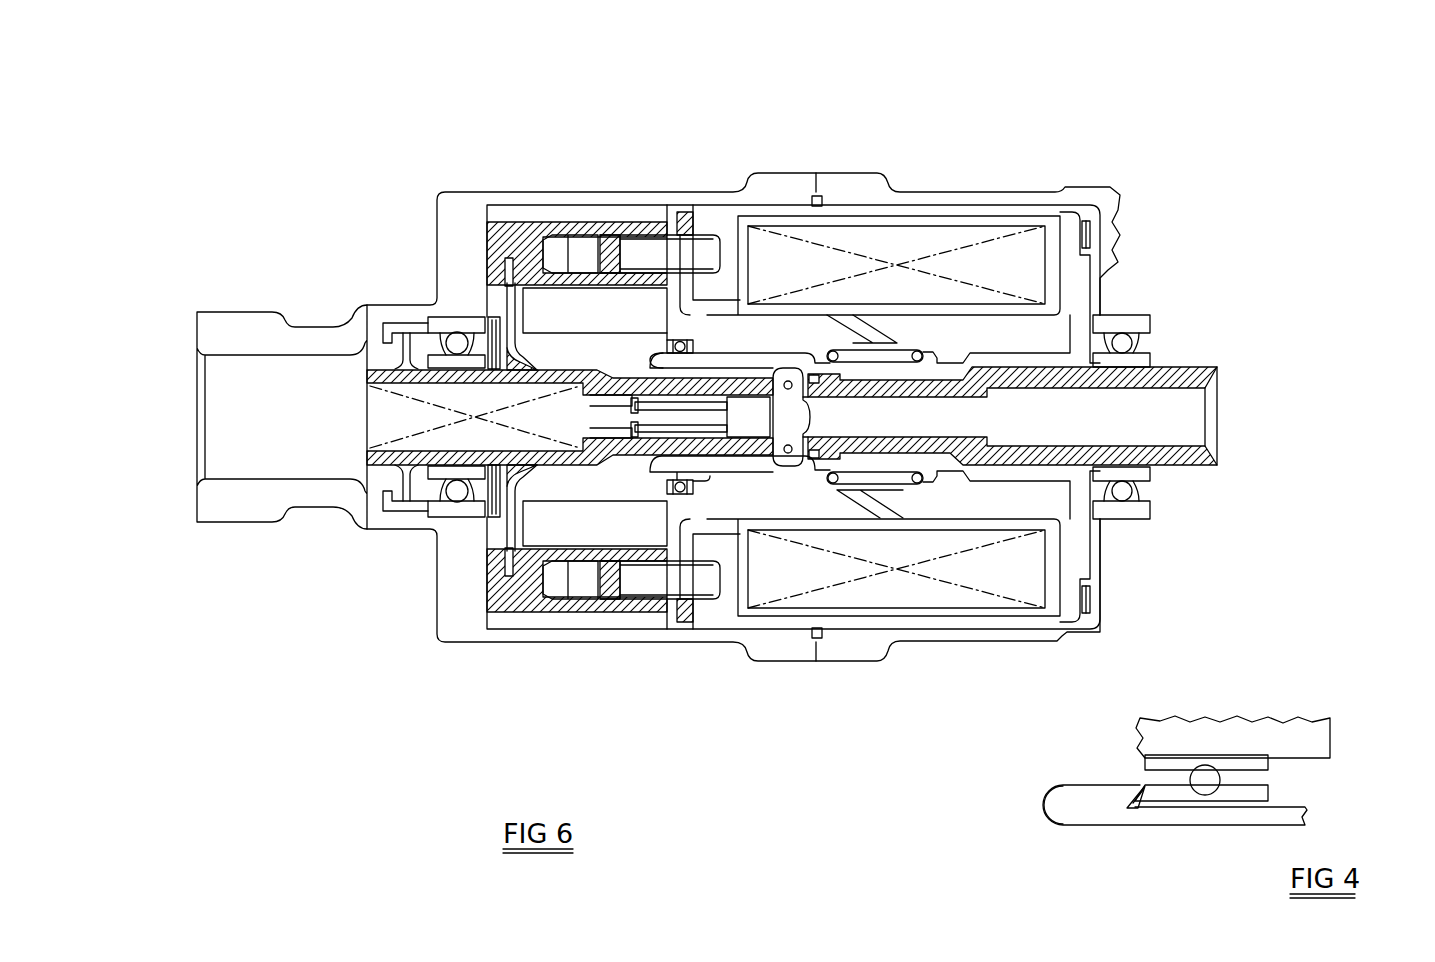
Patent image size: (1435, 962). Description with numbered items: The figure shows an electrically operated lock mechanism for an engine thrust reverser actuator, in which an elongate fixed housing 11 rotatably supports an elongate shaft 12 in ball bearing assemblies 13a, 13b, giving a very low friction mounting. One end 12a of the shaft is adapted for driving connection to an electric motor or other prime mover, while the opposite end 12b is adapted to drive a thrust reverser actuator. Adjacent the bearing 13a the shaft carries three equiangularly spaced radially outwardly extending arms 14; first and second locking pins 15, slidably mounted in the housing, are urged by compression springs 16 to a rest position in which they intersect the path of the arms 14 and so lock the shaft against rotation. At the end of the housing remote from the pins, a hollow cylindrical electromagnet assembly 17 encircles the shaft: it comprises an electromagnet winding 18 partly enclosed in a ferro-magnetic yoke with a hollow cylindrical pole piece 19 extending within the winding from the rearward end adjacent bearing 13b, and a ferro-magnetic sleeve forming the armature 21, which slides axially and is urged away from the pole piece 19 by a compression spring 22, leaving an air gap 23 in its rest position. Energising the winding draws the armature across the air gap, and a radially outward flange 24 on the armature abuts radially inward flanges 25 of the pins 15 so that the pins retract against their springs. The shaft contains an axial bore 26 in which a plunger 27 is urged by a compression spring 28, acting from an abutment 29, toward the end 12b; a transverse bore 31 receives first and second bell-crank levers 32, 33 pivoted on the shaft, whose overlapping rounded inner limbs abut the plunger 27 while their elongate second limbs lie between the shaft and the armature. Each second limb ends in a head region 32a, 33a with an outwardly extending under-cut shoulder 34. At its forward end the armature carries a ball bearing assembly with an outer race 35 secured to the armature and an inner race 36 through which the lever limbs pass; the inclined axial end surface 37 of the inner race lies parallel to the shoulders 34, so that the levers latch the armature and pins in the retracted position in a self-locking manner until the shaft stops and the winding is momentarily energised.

In FIG. 6, the housing 11 is at (826, 173).
In FIG. 6, the shaft 12 is at (878, 381).
In FIG. 6, the end of the shaft 12a is at (395, 420).
In FIG. 6, the opposite end of the shaft 12b is at (1140, 422).
In FIG. 6, the ball bearing assembly 13a is at (455, 322).
In FIG. 6, the ball bearing assembly 13b is at (1130, 322).
In FIG. 6, the arms 14 is at (438, 280).
In FIG. 6, the locking pins 15 is at (508, 236).
In FIG. 6, the compression spring 16 is at (665, 250).
In FIG. 6, the electromagnet assembly 17 is at (890, 592).
In FIG. 6, the electromagnet winding 18 is at (1030, 262).
In FIG. 6, the pole piece 19 is at (1013, 340).
In FIG. 6, the armature 21 is at (798, 333).
In FIG. 4, the armature 21 is at (1310, 730).
In FIG. 6, the compression spring 22 is at (945, 487).
In FIG. 6, the air gap 23 is at (878, 522).
In FIG. 6, the flange 24 is at (572, 578).
In FIG. 6, the flanges 25 is at (704, 433).
In FIG. 6, the bore 26 is at (738, 530).
In FIG. 6, the plunger 27 is at (778, 300).
In FIG. 6, the compression spring 28 is at (570, 246).
In FIG. 6, the abutment 29 is at (497, 318).
In FIG. 6, the transverse bore 31 is at (805, 366).
In FIG. 6, the bell-crank lever 32 is at (720, 366).
In FIG. 4, the bell-crank lever 32 is at (1183, 815).
In FIG. 6, the head region 32a is at (647, 365).
In FIG. 4, the head region 32a is at (1072, 806).
In FIG. 6, the bell-crank lever 33 is at (750, 462).
In FIG. 6, the head region 33a is at (650, 466).
In FIG. 4, the under-cut shoulder 34 is at (1135, 797).
In FIG. 6, the outer race 35 is at (615, 281).
In FIG. 4, the outer race 35 is at (1268, 764).
In FIG. 6, the inner race 36 is at (672, 356).
In FIG. 4, the inner race 36 is at (1250, 790).
In FIG. 4, the axial end surface 37 is at (1141, 808).